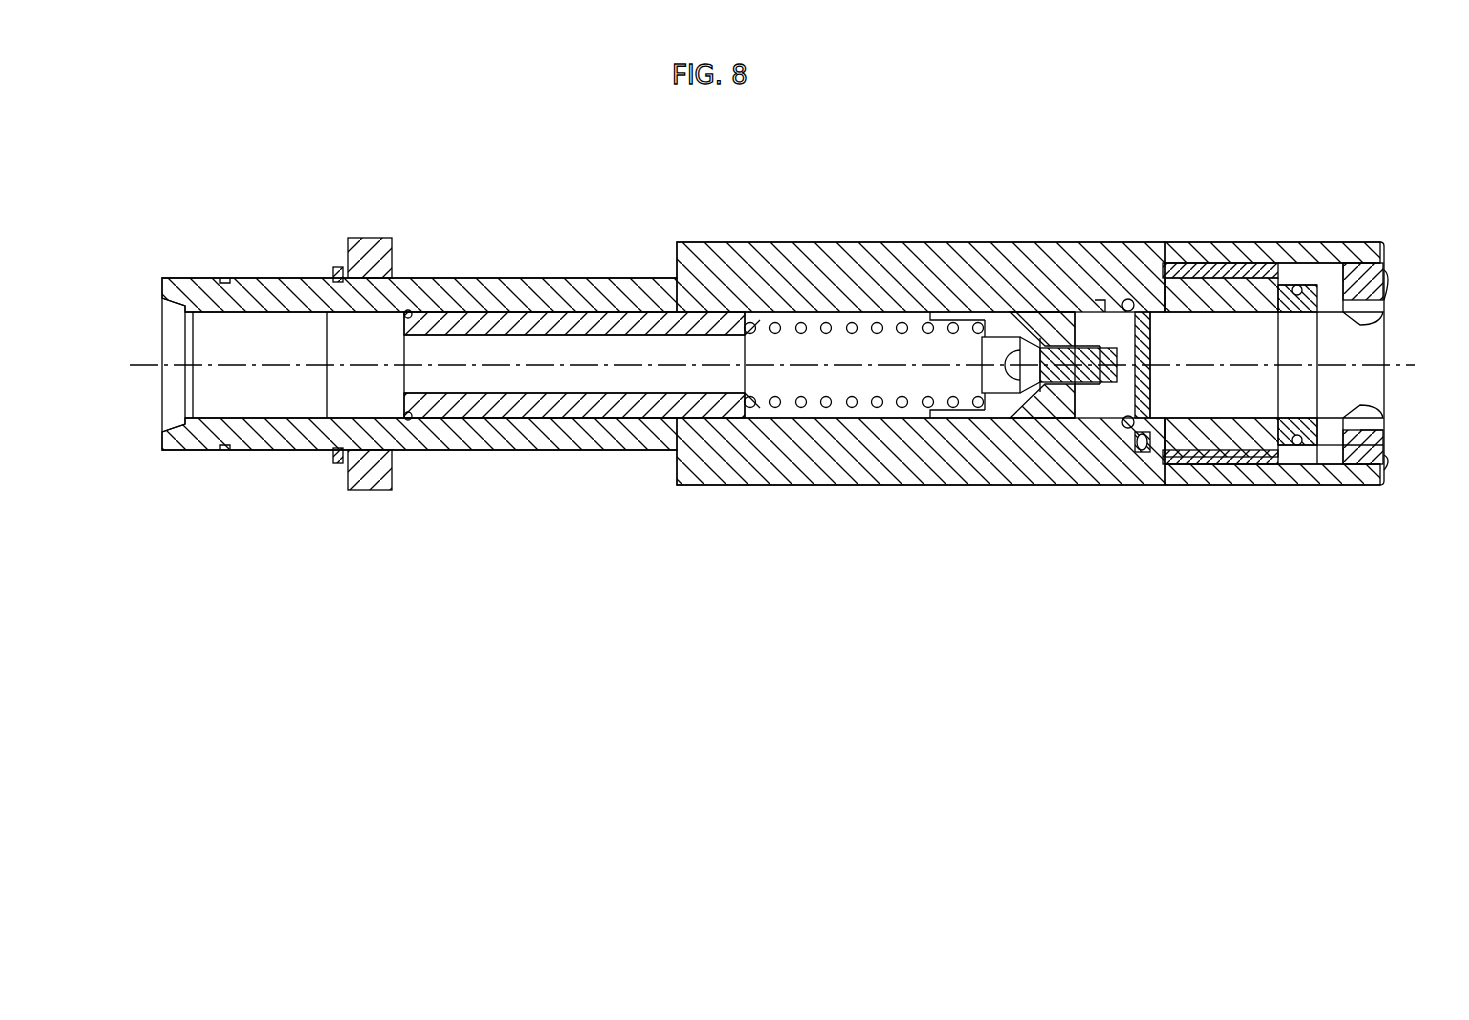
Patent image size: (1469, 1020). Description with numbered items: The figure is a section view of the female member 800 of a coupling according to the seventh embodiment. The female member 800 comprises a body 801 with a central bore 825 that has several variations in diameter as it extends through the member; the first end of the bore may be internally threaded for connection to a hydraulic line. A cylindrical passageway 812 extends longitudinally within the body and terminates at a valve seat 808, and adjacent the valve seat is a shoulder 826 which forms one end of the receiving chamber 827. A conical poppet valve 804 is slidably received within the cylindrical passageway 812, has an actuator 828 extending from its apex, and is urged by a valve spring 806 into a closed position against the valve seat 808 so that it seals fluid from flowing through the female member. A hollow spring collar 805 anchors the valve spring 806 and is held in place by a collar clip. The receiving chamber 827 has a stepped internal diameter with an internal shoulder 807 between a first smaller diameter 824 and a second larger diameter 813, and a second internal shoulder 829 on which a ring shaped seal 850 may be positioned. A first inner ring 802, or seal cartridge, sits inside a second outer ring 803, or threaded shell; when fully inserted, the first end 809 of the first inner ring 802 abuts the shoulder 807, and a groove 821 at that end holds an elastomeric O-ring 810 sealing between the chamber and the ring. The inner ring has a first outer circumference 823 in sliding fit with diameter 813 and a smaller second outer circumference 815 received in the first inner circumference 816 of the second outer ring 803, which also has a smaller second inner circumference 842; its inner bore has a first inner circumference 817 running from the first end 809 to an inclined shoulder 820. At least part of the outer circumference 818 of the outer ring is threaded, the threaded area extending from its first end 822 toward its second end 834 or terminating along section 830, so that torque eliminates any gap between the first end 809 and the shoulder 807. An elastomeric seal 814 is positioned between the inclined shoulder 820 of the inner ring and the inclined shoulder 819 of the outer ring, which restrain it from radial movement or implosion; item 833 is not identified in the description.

The female member 800 is at (923, 165).
The body 801 is at (851, 486).
The first inner ring 802 is at (1255, 445).
The second outer ring 803 is at (1358, 262).
The poppet valve 804 is at (1070, 310).
The hollow spring collar 805 is at (565, 406).
The valve spring 806 is at (777, 405).
The internal shoulder 807 is at (1132, 298).
The valve seat 808 is at (1035, 405).
The first end 809 is at (1105, 440).
The elastomeric O-ring 810 is at (1162, 290).
The cylindrical passageway 812 is at (500, 405).
The second larger diameter 813 is at (1200, 268).
The elastomeric seal 814 is at (1320, 460).
The second outer circumference 815 is at (1240, 268).
The first inner circumference 816 is at (1282, 285).
The first inner circumference 817 is at (1195, 400).
The outer circumference 818 is at (1350, 462).
The inclined shoulder 819 is at (1318, 262).
The inclined shoulder 820 is at (1300, 450).
The groove 821 is at (1365, 450).
The first end 822 is at (1412, 468).
The first outer circumference 823 is at (1148, 455).
The first smaller diameter 824 is at (1092, 305).
The central bore 825 is at (514, 350).
The shoulder 826 is at (1005, 440).
The receiving chamber 827 is at (1085, 410).
The actuator 828 is at (1060, 410).
The second internal shoulder 829 is at (1150, 275).
The section 830 is at (1280, 446).
The ring face 833 is at (1295, 284).
The second end 834 is at (1215, 402).
The second inner circumference 842 is at (1400, 246).
The ring shaped seal 850 is at (1100, 400).